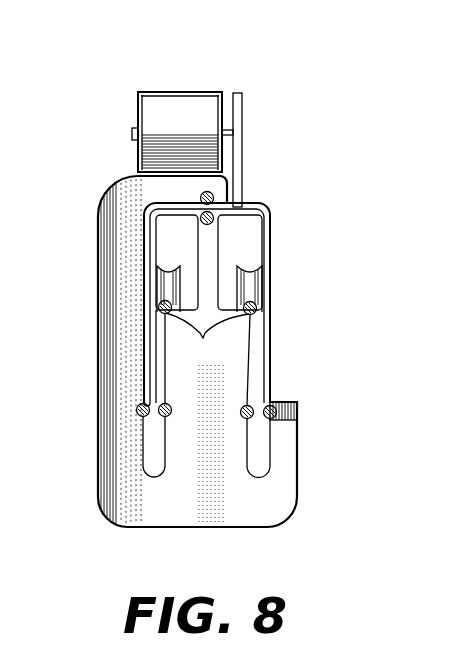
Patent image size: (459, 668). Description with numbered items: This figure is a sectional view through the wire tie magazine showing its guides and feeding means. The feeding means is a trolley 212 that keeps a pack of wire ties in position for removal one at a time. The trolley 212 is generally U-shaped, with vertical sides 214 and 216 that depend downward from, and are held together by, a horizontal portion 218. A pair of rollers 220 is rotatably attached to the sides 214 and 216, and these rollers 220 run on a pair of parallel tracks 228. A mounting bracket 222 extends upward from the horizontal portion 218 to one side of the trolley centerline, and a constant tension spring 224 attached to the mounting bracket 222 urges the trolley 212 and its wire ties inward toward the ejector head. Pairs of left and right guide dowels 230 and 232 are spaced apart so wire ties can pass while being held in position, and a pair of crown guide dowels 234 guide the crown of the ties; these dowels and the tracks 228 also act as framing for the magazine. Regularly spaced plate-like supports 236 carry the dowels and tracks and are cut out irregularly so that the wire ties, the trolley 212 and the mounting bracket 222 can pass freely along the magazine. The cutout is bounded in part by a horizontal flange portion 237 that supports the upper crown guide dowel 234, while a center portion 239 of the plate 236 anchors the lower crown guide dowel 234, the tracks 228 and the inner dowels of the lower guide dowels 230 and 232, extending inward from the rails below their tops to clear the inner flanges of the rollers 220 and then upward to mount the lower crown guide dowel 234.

The trolley 212 is at (272, 215).
The vertical side 214 is at (273, 253).
The vertical side 216 is at (165, 246).
The horizontal portion 218 is at (215, 208).
The rollers 220 is at (180, 282).
The mounting bracket 222 is at (242, 122).
The constant tension spring 224 is at (197, 92).
The parallel tracks 228 is at (207, 359).
The left guide dowels 230 is at (158, 420).
The right guide dowels 232 is at (253, 418).
The crown guide dowels 234 is at (214, 197).
The plate-like supports 236 is at (250, 503).
The horizontal flange portion 237 is at (127, 192).
The center portion 239 is at (217, 373).